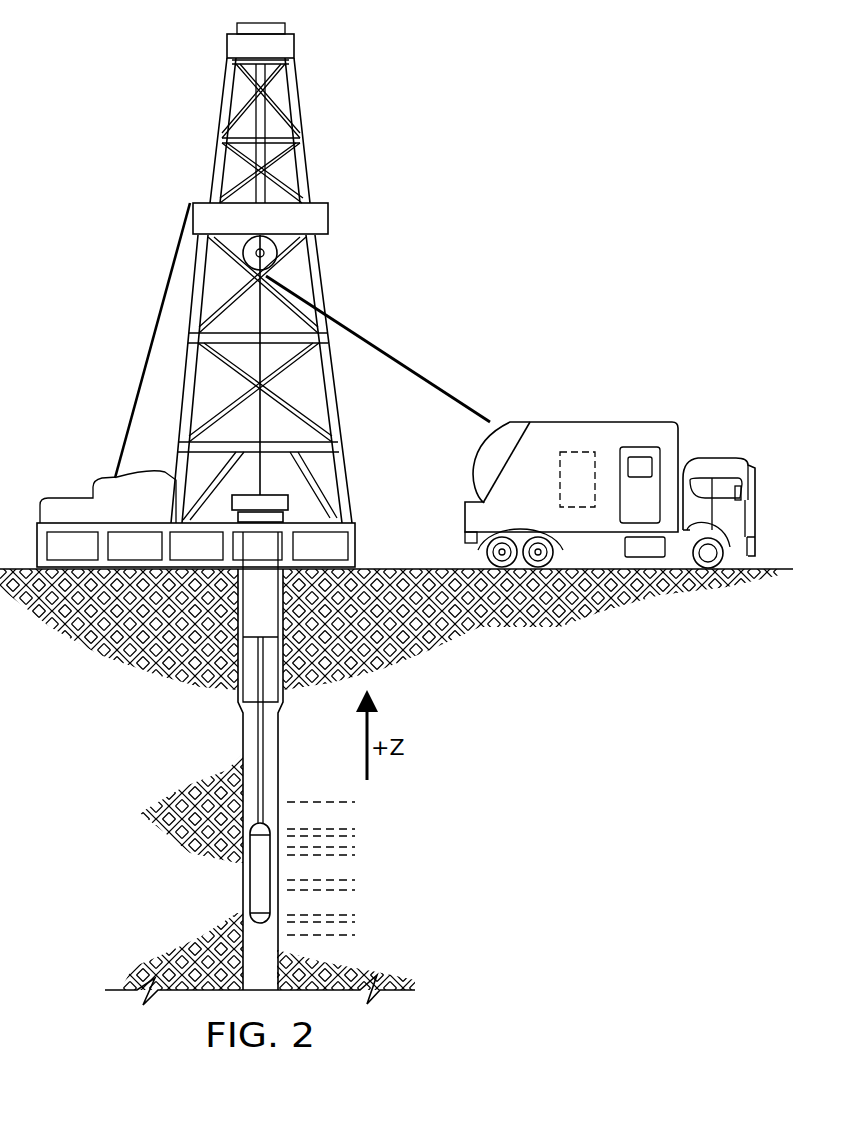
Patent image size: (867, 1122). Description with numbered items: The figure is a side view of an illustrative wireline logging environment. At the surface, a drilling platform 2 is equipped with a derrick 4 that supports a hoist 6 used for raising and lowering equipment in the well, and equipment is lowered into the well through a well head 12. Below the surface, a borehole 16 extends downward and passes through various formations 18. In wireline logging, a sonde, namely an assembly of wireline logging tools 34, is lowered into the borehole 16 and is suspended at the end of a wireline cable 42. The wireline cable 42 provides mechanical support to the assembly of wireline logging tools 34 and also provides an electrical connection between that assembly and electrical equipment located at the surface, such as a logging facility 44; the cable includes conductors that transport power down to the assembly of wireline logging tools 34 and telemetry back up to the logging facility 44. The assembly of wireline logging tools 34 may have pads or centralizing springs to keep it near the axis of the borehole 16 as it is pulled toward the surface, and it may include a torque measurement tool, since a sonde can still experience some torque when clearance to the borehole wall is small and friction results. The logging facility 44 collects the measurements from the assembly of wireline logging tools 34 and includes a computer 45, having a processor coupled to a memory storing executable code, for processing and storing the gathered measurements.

The drilling platform 2 is at (357, 547).
The derrick 4 is at (348, 482).
The hoist 6 is at (256, 264).
The well head 12 is at (245, 492).
The borehole 16 is at (278, 757).
The formations 18 is at (366, 798).
The assembly of wireline logging tools 34 is at (248, 875).
The wireline cable 42 is at (390, 358).
The logging facility 44 is at (642, 422).
The computer 45 is at (560, 475).